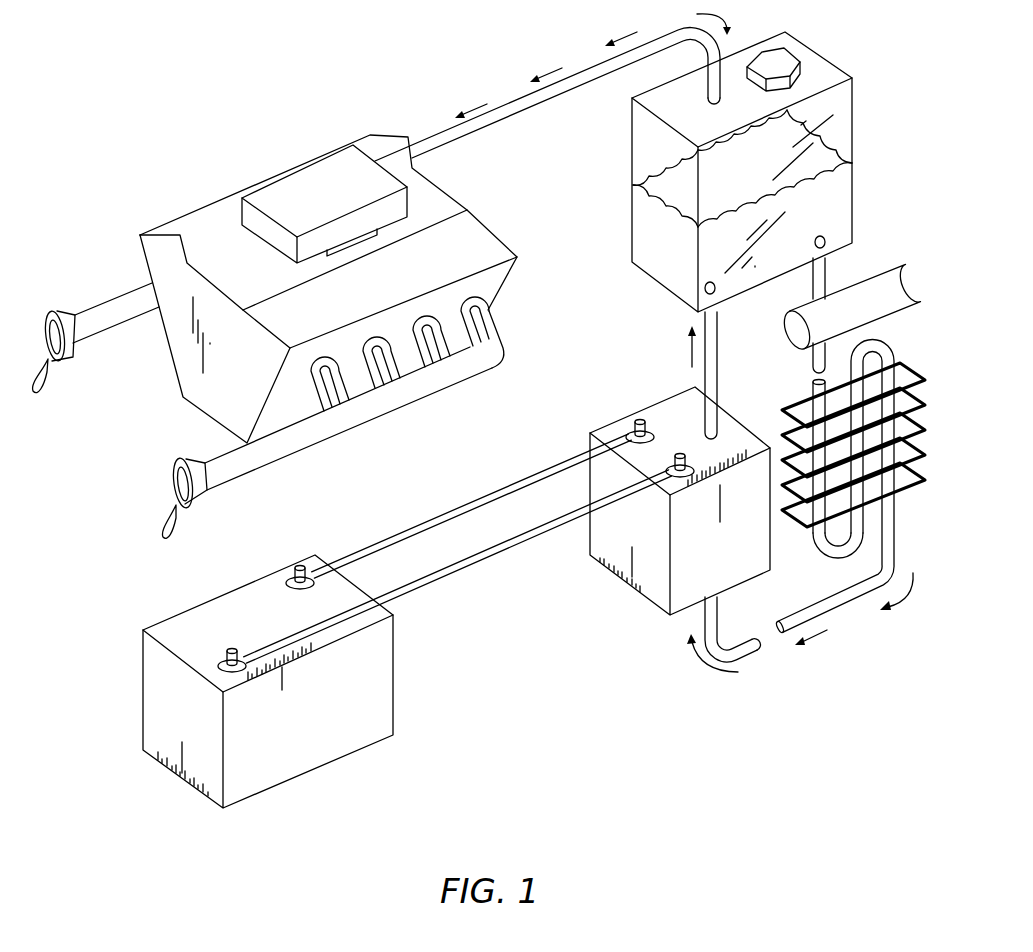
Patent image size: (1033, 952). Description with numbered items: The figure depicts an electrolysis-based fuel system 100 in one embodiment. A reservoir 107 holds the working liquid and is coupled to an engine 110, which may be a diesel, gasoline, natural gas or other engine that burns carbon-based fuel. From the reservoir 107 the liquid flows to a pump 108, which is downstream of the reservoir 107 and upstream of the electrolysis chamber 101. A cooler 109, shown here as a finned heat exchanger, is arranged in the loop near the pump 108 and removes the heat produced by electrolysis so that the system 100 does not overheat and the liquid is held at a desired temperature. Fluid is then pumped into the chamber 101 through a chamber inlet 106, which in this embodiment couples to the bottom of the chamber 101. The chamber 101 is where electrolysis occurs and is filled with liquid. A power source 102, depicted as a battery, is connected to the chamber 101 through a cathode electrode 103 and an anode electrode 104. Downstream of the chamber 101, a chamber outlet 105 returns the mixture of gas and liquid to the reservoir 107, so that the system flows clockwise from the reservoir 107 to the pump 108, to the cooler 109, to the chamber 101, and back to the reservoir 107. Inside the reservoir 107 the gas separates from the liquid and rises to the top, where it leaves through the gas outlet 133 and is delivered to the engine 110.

The system 100 is at (206, 130).
The chamber 101 is at (630, 589).
The power source 102 is at (293, 782).
The cathode electrode 103 is at (636, 421).
The anode electrode 104 is at (685, 462).
The chamber outlet 105 is at (713, 343).
The chamber inlet 106 is at (712, 652).
The reservoir 107 is at (828, 60).
The pump 108 is at (889, 270).
The cooler 109 is at (794, 403).
The engine 110 is at (345, 132).
The gas outlet 133 is at (598, 47).